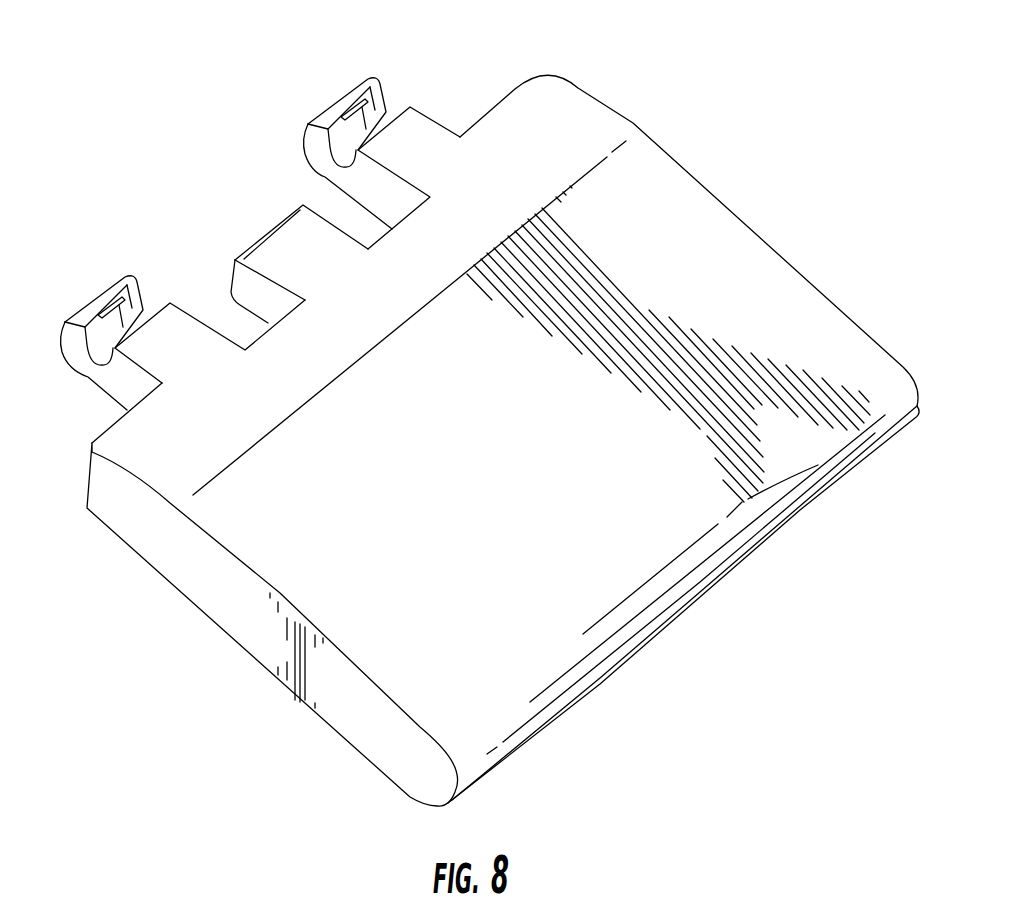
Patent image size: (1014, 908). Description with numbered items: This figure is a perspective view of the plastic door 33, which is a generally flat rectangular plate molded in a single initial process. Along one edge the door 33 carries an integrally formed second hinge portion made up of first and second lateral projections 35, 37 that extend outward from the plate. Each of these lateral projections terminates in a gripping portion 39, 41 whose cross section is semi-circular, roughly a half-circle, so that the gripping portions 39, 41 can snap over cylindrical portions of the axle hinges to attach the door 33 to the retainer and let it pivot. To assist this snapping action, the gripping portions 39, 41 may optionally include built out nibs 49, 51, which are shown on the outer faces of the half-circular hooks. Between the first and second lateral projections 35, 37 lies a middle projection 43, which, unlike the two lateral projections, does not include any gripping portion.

The plastic door 33 is at (533, 436).
The first lateral projection 35 is at (162, 343).
The second lateral projection 37 is at (407, 137).
The gripping portion 39 is at (84, 314).
The gripping portion 41 is at (328, 118).
The middle projection 43 is at (281, 250).
The built out nib 49 is at (127, 295).
The built out nib 51 is at (387, 125).